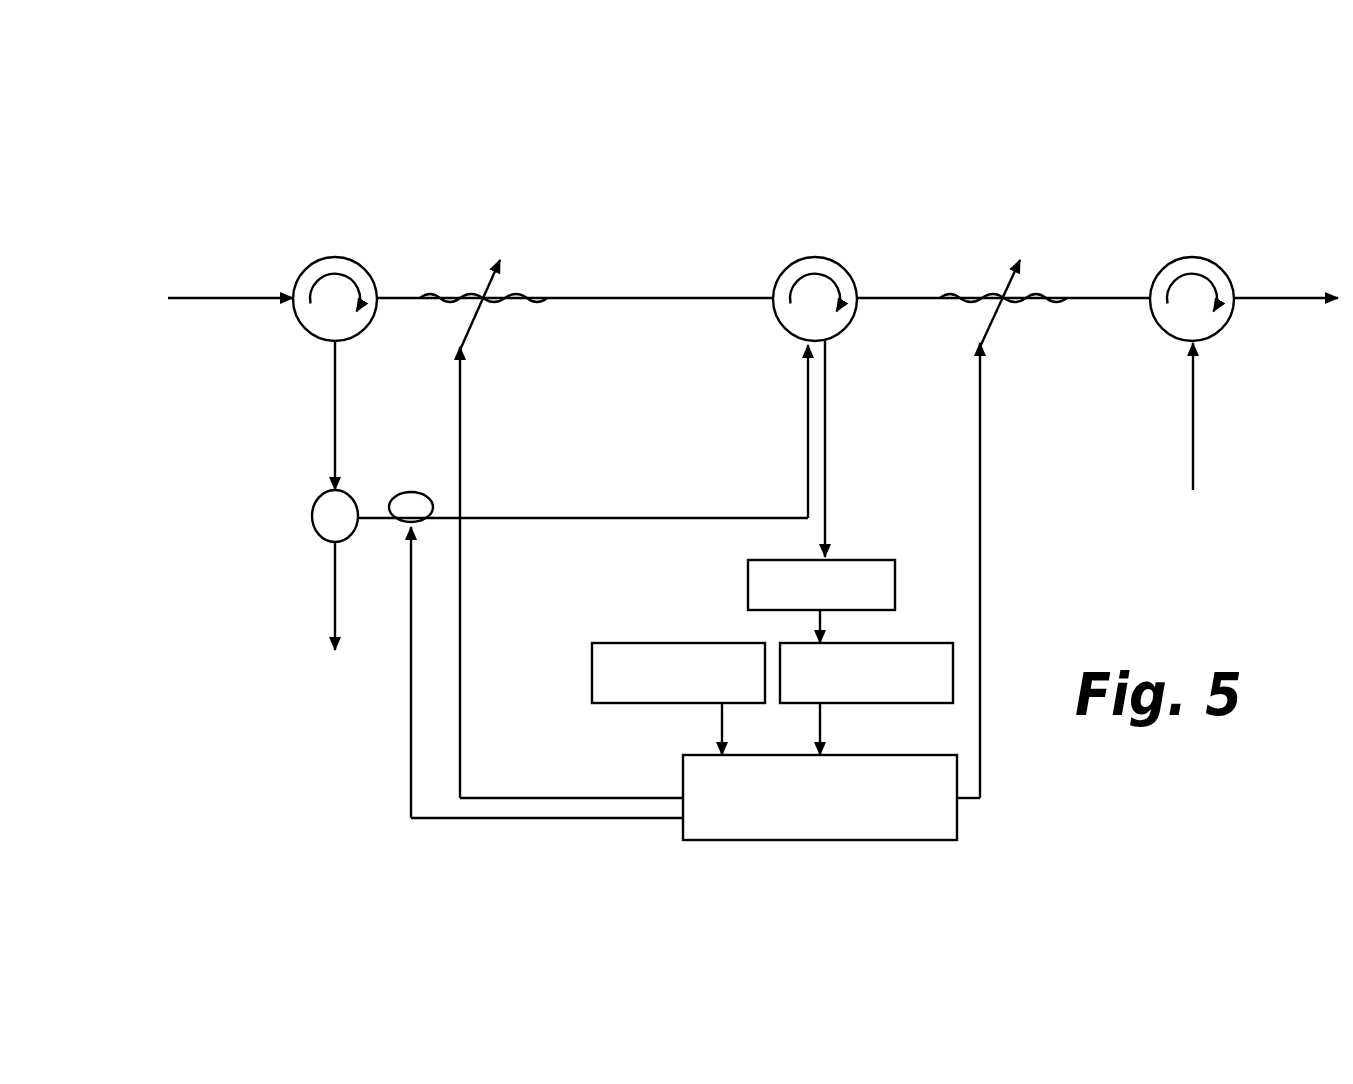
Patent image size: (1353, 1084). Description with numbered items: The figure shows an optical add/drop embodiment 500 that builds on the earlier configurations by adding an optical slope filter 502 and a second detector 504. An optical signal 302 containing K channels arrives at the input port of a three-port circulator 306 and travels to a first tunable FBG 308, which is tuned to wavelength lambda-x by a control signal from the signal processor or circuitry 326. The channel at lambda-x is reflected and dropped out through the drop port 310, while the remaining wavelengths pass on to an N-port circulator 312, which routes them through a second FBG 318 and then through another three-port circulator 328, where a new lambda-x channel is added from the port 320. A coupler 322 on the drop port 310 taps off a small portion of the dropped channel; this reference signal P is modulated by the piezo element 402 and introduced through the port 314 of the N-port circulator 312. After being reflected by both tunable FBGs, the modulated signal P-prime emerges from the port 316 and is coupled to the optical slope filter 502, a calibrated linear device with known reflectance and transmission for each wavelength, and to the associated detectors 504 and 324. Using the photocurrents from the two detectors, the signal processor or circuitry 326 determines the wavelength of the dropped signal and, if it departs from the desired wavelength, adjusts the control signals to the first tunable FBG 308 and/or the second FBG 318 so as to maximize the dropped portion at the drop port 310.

The embodiment 500 is at (1260, 130).
The optical signal 302 is at (168, 290).
The three-port circulator 306 is at (320, 261).
The first tunable FBG 308 is at (580, 493).
The drop port 310 is at (330, 360).
The N-port circulator 312 is at (833, 247).
The port 314 is at (805, 432).
The port 316 is at (835, 362).
The second FBG 318 is at (1003, 487).
The port 320 is at (1187, 360).
The coupler 322 is at (309, 506).
The optic-to-electronic conversion device 324 is at (893, 656).
The signal processor or circuitry 326 is at (940, 830).
The three-port circulator 328 is at (1224, 261).
The piezo element 402 is at (410, 492).
The optical slope filter 502 is at (888, 573).
The second detector 504 is at (615, 649).